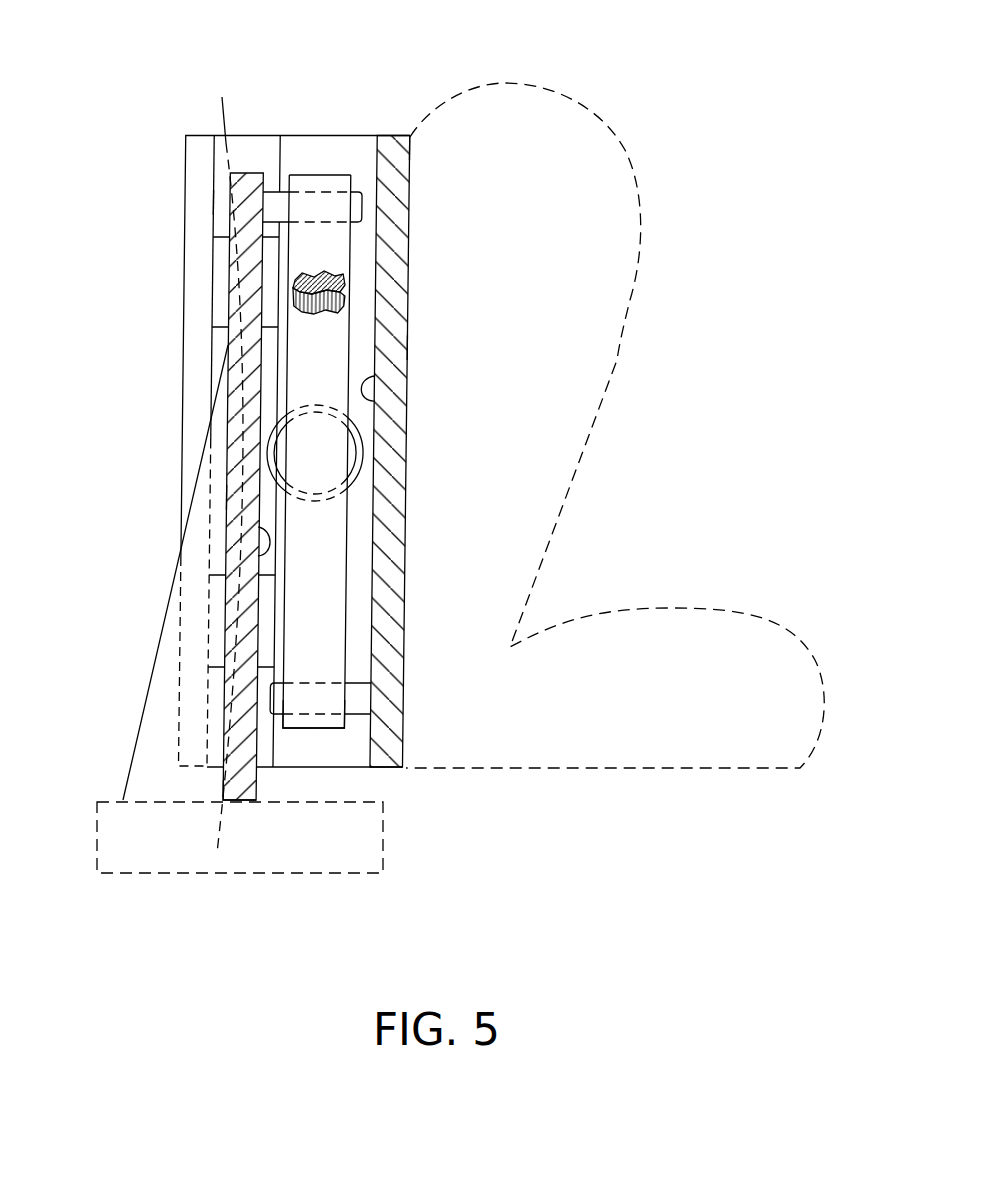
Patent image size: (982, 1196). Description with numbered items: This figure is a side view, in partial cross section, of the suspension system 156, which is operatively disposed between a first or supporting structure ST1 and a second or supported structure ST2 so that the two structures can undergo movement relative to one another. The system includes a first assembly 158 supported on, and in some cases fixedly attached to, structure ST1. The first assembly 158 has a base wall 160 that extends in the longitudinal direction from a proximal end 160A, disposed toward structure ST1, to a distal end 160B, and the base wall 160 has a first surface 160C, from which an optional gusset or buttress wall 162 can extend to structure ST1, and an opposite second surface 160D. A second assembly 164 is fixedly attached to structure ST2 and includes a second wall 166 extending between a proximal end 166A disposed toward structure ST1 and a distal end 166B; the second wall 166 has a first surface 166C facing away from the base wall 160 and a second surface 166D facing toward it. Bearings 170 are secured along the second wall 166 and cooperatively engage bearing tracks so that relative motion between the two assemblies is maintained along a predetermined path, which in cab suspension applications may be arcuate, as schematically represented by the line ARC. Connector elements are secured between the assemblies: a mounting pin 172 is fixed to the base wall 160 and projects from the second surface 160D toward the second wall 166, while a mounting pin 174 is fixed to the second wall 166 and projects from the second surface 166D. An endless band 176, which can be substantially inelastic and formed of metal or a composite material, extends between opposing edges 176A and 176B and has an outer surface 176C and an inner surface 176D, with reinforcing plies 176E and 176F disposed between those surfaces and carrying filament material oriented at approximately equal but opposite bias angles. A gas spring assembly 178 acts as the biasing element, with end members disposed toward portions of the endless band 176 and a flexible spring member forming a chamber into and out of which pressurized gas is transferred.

The suspension system 156 is at (166, 108).
The first assembly 158 is at (141, 524).
The base wall 160 is at (245, 733).
The proximal end 160A is at (156, 777).
The distal end 160B is at (210, 203).
The first surface 160C is at (225, 498).
The second surface 160D is at (260, 555).
The buttress wall 162 is at (148, 743).
The second assembly 164 is at (388, 109).
The second wall 166 is at (392, 314).
The proximal end 166A is at (399, 788).
The distal end 166B is at (447, 139).
The first surface 166C is at (408, 347).
The second surface 166D is at (372, 400).
The bearings 170 is at (217, 287).
The mounting pin 172 is at (270, 200).
The mounting pin 174 is at (357, 698).
The endless band 176 is at (341, 545).
The first edge 176A is at (287, 618).
The second edge 176B is at (345, 587).
The outer surface 176C is at (299, 176).
The inner surface 176D is at (326, 190).
The reinforcing ply 176E is at (340, 278).
The reinforcing ply 176F is at (343, 300).
The gas spring assembly 178 is at (367, 476).
The arcuate path line ARC is at (225, 145).
The first structure ST1 is at (162, 873).
The second structure ST2 is at (615, 130).